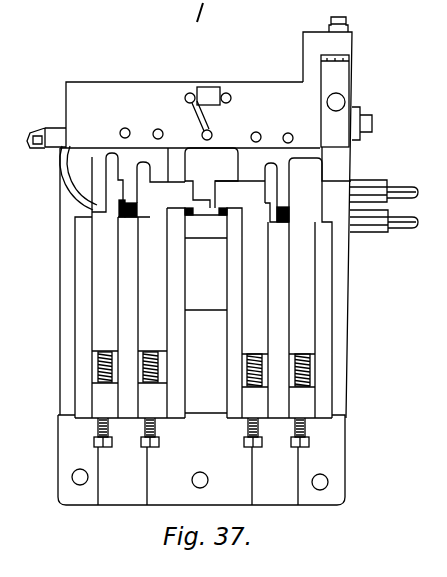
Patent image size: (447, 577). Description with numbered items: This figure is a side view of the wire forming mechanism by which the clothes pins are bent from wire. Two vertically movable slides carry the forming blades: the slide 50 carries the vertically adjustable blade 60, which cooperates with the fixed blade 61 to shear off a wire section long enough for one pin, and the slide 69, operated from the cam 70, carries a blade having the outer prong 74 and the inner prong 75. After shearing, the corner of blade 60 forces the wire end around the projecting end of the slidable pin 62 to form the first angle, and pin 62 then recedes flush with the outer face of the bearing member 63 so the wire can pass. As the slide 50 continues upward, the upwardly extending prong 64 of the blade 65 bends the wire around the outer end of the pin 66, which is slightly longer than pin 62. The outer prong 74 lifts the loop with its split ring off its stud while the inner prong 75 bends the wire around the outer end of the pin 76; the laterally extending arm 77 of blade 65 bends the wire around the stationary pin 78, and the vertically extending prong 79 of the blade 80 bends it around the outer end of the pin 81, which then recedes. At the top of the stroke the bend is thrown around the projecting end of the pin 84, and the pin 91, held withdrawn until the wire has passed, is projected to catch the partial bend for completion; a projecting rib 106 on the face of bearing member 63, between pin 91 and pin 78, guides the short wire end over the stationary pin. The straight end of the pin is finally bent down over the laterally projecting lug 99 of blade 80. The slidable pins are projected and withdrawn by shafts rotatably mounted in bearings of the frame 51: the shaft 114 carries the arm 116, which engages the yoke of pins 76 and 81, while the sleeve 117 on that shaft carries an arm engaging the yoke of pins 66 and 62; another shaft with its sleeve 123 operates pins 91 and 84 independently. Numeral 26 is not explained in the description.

The clamp bracket 26 is at (44, 129).
The bearing member 63 is at (125, 88).
The pin 91 is at (191, 88).
The pin 84 is at (233, 98).
The projecting rib 106 is at (199, 120).
The stationary pin 78 is at (212, 134).
The pin 76 is at (120, 133).
The pin 81 is at (159, 129).
The pin 66 is at (259, 133).
The slidable pin 62 is at (292, 135).
The fixed blade 61 is at (337, 217).
The outer prong 74 is at (58, 188).
The cam 70 is at (116, 243).
The inner prong 75 is at (106, 169).
The blade 80 is at (129, 313).
The vertically extending prong 79 is at (144, 175).
The laterally extending arm 77 is at (219, 180).
The laterally projecting lug 99 is at (208, 209).
The upwardly extending prong 64 is at (276, 166).
The blade 65 is at (265, 320).
The vertically adjustable blade 60 is at (310, 288).
The sleeve 117 is at (366, 185).
The shaft 114 is at (404, 188).
The sleeve 123 is at (369, 233).
The arm 116 is at (412, 226).
The frame 51 is at (341, 438).
The slide 69 is at (128, 418).
The slide 50 is at (282, 423).